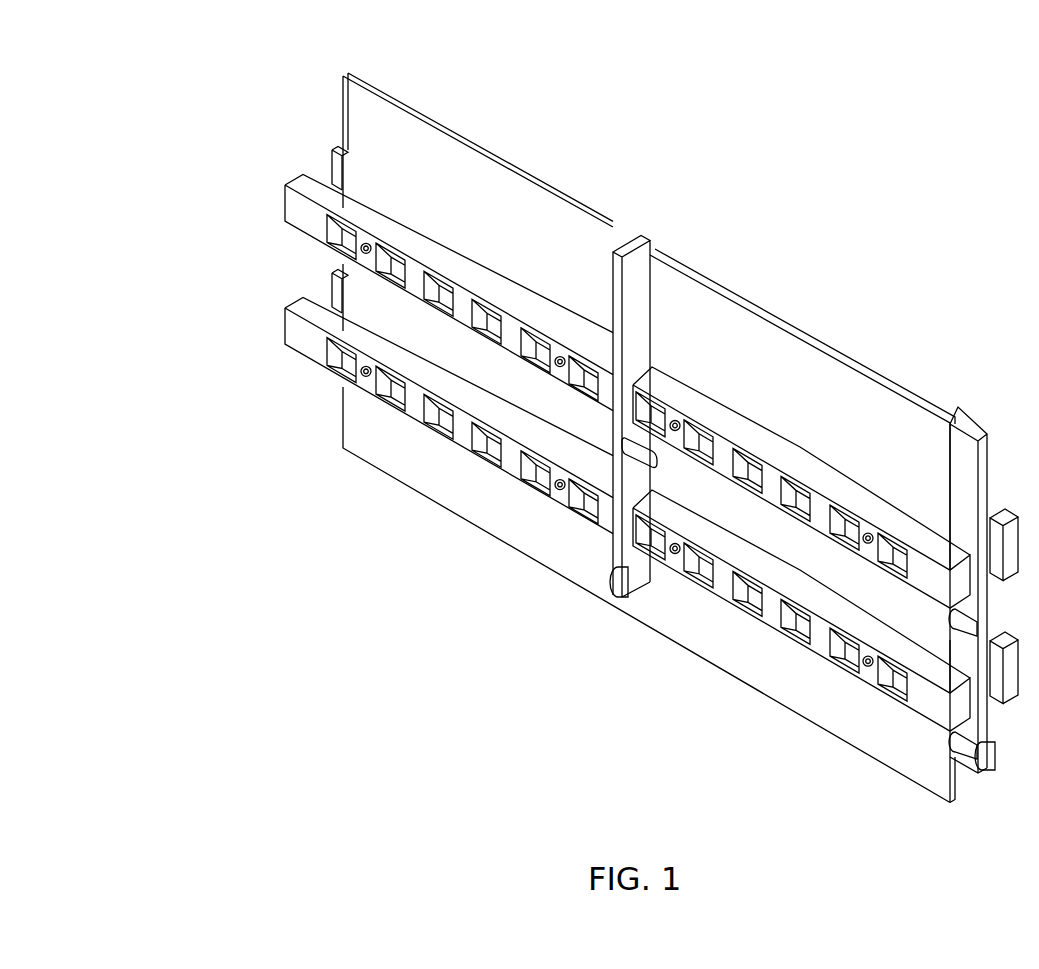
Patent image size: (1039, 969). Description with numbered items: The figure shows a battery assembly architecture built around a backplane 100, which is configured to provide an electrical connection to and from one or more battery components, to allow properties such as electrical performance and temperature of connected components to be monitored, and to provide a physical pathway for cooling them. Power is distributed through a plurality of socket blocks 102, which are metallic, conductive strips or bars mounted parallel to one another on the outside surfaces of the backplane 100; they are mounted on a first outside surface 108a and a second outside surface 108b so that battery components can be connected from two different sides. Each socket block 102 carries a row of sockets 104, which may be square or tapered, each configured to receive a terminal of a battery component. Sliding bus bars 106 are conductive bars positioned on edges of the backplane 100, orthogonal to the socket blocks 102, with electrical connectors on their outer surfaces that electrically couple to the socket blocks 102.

The backplane 100 is at (354, 55).
The socket blocks 102 is at (302, 336).
The sockets 104 is at (390, 380).
The sliding bus bars 106 is at (960, 428).
The first outside surface 108a is at (410, 152).
The second outside surface 108b is at (578, 140).